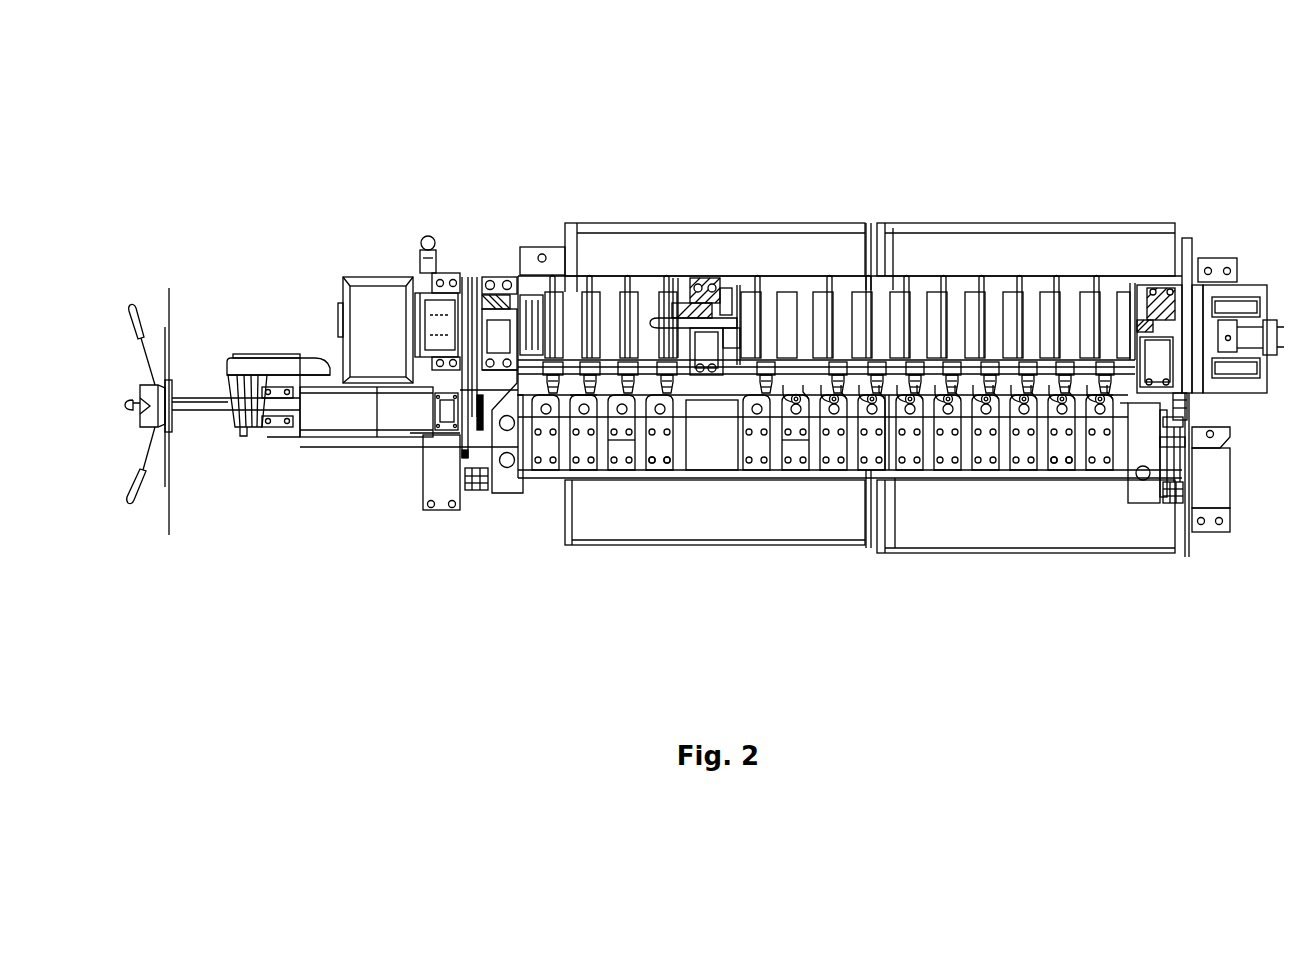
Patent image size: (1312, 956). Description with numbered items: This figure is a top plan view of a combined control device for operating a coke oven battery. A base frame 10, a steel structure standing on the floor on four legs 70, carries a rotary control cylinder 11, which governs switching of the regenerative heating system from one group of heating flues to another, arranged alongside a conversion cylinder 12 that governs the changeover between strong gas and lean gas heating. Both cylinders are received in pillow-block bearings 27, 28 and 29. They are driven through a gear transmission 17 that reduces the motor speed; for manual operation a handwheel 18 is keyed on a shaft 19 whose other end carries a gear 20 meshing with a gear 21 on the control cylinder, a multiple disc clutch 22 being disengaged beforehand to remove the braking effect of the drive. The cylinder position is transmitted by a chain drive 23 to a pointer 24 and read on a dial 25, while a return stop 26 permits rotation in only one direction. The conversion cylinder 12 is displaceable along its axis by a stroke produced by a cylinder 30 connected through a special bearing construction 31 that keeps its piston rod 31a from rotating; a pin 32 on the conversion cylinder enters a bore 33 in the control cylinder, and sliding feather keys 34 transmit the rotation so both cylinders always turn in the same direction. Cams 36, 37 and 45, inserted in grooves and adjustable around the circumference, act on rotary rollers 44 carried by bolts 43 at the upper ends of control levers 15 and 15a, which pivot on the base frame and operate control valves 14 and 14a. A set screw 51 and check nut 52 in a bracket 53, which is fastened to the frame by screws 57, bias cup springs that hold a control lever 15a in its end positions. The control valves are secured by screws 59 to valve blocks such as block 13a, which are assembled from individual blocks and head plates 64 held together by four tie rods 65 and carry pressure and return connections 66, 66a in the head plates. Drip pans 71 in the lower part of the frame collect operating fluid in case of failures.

The base frame 10 is at (787, 282).
The control cylinder 11 is at (607, 303).
The conversion cylinder 12 is at (955, 310).
The valve block 13a is at (698, 467).
The control valve 14 is at (614, 460).
The control valve 14a is at (800, 472).
The control lever 15 is at (580, 398).
The control lever 15a is at (1100, 472).
The gear transmission 17 is at (372, 280).
The handwheel 18 is at (143, 427).
The shaft 19 is at (215, 413).
The gear 20 is at (462, 462).
The gear 21 is at (463, 275).
The multiple disc clutch 22 is at (435, 297).
The chain drive 23 is at (245, 428).
The pointer 24 is at (148, 393).
The dial 25 is at (168, 322).
The return stop 26 is at (466, 442).
The pillow-block bearing 27 is at (500, 297).
The pillow-block bearing 28 is at (725, 300).
The pillow-block bearing 29 is at (1160, 295).
The cylinder 30 is at (1272, 327).
The bearing construction 31 is at (1188, 280).
The piston rod 31a is at (1243, 392).
The pin 32 is at (738, 318).
The bore 33 is at (690, 278).
The sliding feather keys 34 is at (668, 318).
The cam 36 is at (553, 274).
The cam 37 is at (584, 274).
The bolt 43 is at (585, 367).
The rotary roller 44 is at (607, 340).
The cam 45 is at (866, 292).
The set screw 51 is at (920, 404).
The check nut 52 is at (930, 410).
The bracket 53 is at (905, 420).
The screw 57 is at (885, 440).
The screw 59 is at (652, 465).
The end block 64 is at (497, 480).
The tie rod 65 is at (1187, 418).
The pressure connection 66 is at (507, 468).
The return connection 66a is at (508, 431).
The leg 70 is at (432, 513).
The drip pan 71 is at (735, 238).